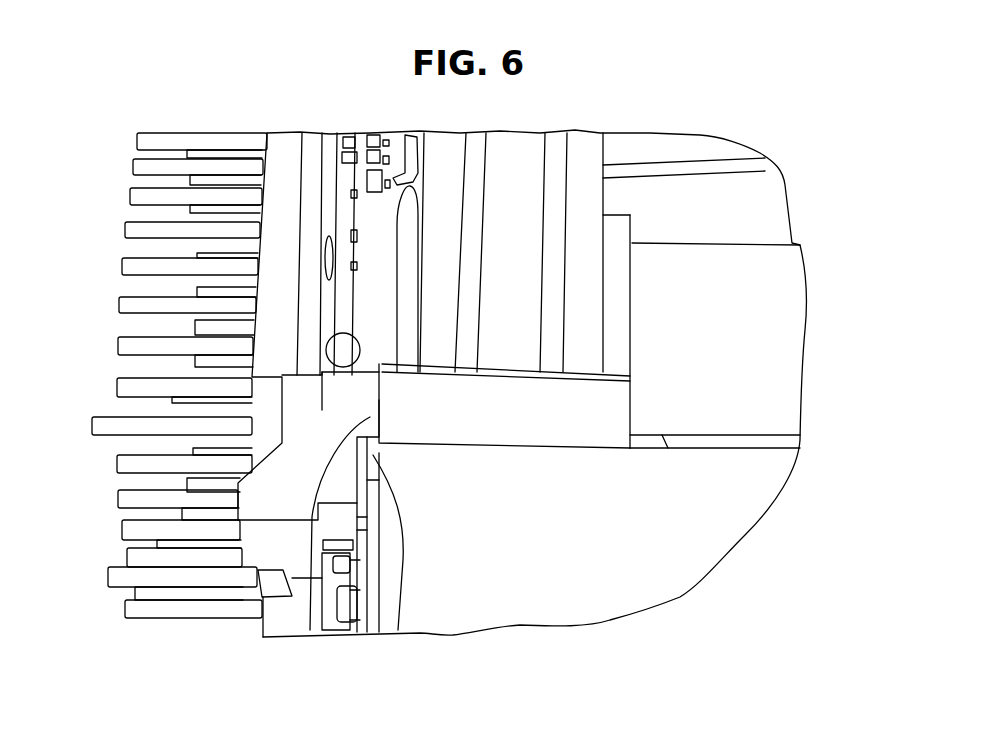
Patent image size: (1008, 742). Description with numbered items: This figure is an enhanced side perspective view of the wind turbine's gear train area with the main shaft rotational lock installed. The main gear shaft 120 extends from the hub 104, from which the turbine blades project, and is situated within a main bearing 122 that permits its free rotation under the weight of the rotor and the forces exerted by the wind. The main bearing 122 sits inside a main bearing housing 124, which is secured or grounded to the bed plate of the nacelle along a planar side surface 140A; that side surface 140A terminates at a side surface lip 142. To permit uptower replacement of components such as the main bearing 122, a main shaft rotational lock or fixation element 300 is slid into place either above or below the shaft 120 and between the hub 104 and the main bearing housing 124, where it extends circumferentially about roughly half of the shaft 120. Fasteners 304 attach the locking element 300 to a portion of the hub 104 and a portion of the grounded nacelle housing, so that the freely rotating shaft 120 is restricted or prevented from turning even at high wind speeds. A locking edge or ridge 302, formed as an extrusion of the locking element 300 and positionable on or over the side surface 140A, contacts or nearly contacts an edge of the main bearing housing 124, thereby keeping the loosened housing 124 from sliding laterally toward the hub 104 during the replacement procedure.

The hub 104 is at (92, 293).
The main shaft rotational lock or fixation element 300 is at (233, 600).
The locking edge or ridge 302 is at (313, 625).
The fasteners 304 is at (361, 270).
The side surface lip 142 is at (380, 633).
The main bearing housing 124 is at (560, 197).
The main bearing 122 is at (660, 264).
The main gear shaft 120 is at (735, 305).
The side surface 140A is at (697, 450).